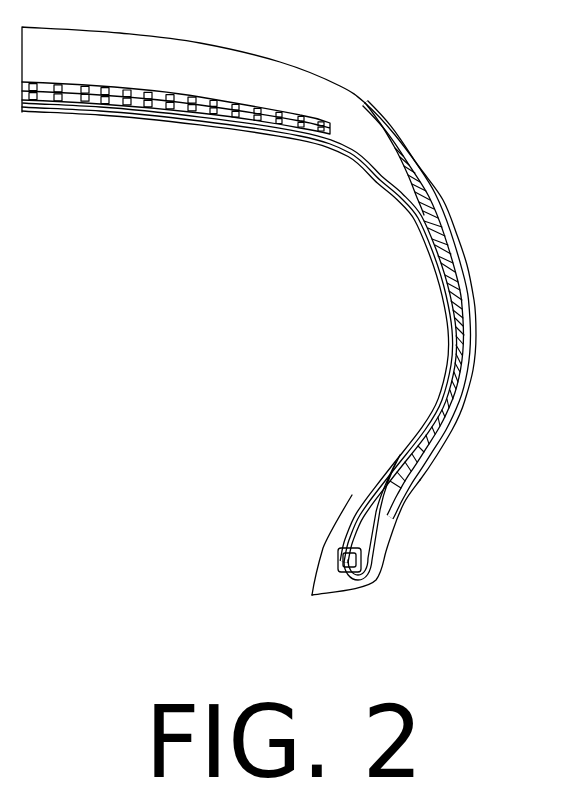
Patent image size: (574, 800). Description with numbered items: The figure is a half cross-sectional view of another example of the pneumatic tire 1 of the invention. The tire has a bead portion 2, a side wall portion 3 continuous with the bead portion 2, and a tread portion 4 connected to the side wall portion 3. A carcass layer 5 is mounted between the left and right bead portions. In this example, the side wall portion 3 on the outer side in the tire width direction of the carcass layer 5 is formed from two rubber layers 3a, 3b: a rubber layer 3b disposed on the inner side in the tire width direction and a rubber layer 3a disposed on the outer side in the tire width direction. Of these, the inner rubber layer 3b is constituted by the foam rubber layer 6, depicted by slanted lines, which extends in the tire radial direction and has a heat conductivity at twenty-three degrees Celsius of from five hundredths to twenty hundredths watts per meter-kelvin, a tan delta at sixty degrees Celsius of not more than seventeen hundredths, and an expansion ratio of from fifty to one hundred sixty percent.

The pneumatic tire 1 is at (290, 305).
The bead portion 2 is at (412, 546).
The side wall portion 3 is at (491, 328).
The rubber layer 3a is at (428, 177).
The rubber layer 3b is at (438, 209).
The tread portion 4 is at (250, 64).
The carcass layer 5 is at (463, 248).
The foam rubber layer 6 is at (440, 235).